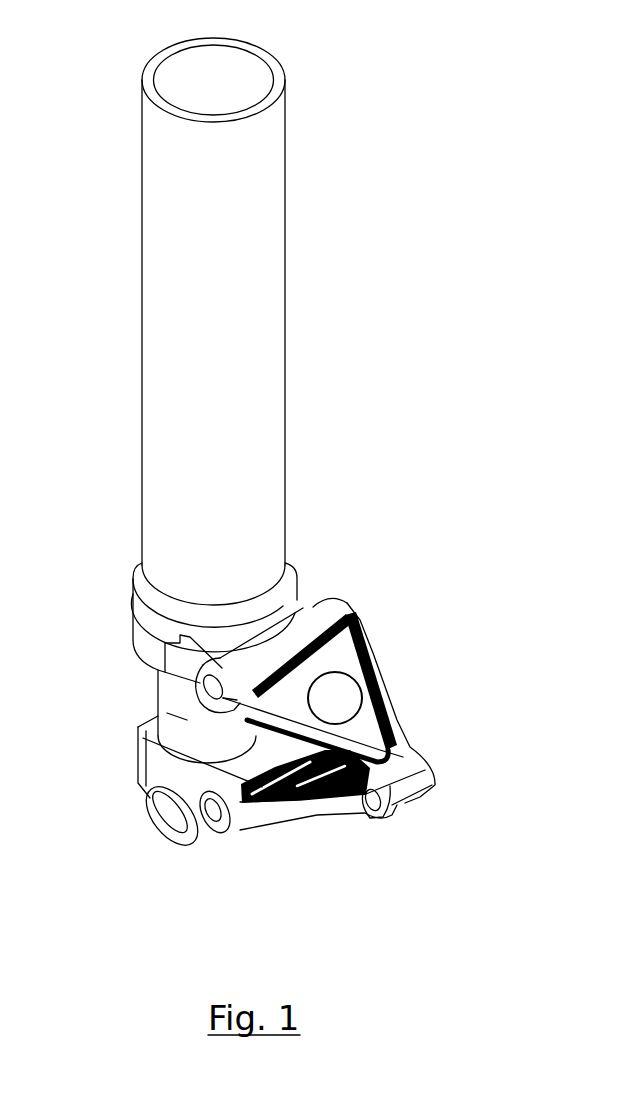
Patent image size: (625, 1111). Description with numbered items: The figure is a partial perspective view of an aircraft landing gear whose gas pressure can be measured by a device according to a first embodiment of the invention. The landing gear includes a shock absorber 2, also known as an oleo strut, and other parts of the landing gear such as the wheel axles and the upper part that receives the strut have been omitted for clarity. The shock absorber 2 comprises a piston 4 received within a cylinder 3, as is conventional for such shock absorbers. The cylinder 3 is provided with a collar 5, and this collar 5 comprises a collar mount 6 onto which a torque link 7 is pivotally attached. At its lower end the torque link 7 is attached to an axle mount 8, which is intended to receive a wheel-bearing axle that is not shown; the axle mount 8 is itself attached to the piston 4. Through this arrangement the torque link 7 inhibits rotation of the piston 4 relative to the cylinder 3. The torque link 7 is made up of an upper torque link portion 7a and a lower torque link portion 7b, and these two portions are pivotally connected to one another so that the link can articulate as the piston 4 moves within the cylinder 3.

The shock absorber 2 is at (412, 110).
The cylinder 3 is at (252, 510).
The piston 4 is at (172, 705).
The collar 5 is at (145, 624).
The collar mount 6 is at (278, 631).
The torque link 7 is at (450, 693).
The upper torque link portion 7a is at (345, 663).
The lower torque link portion 7b is at (283, 817).
The axle mount 8 is at (177, 773).